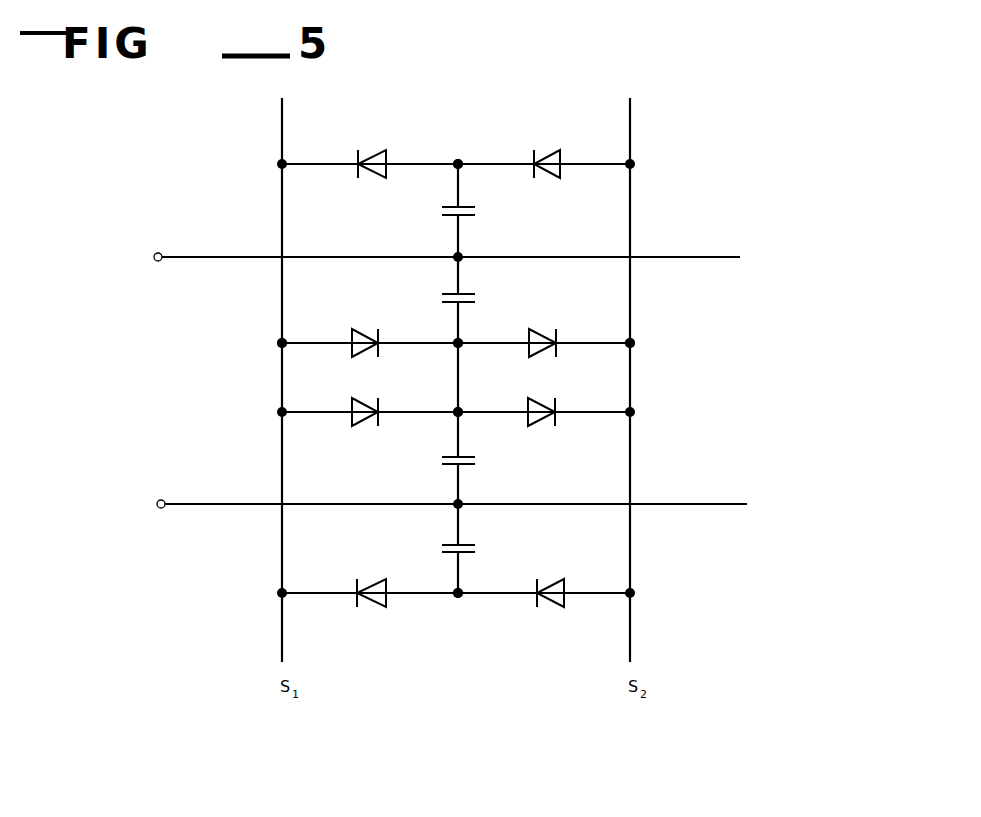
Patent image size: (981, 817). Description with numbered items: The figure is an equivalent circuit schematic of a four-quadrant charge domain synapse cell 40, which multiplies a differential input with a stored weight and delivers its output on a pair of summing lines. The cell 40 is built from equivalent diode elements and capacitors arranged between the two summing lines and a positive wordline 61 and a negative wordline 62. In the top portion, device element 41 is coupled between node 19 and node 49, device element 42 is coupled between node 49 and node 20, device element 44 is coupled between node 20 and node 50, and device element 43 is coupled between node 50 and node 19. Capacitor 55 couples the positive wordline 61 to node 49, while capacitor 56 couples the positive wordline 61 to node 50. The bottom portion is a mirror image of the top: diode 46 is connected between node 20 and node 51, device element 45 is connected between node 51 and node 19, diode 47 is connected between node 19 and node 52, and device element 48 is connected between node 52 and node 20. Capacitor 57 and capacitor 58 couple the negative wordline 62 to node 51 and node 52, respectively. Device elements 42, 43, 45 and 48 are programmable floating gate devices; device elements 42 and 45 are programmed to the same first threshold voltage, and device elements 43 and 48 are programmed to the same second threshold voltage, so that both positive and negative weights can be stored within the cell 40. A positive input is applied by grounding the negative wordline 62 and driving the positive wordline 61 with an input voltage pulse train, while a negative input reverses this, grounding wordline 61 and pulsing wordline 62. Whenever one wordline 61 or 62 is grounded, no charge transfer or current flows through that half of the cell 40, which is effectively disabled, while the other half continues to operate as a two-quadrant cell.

The synapse cell 40 is at (686, 87).
The device element 41 is at (372, 155).
The device element 42 is at (547, 155).
The device element 43 is at (352, 333).
The device element 44 is at (537, 331).
The device element 45 is at (369, 421).
The diode 46 is at (540, 421).
The diode 47 is at (373, 606).
The device element 48 is at (556, 607).
The node 49 is at (458, 160).
The node 50 is at (458, 350).
The node 51 is at (460, 409).
The node 52 is at (459, 598).
The capacitor 55 is at (440, 209).
The capacitor 56 is at (442, 298).
The capacitor 57 is at (440, 458).
The capacitor 58 is at (442, 549).
The positive wordline 61 is at (696, 258).
The negative wordline 62 is at (712, 503).
The node 19 is at (280, 343).
The node 20 is at (634, 343).